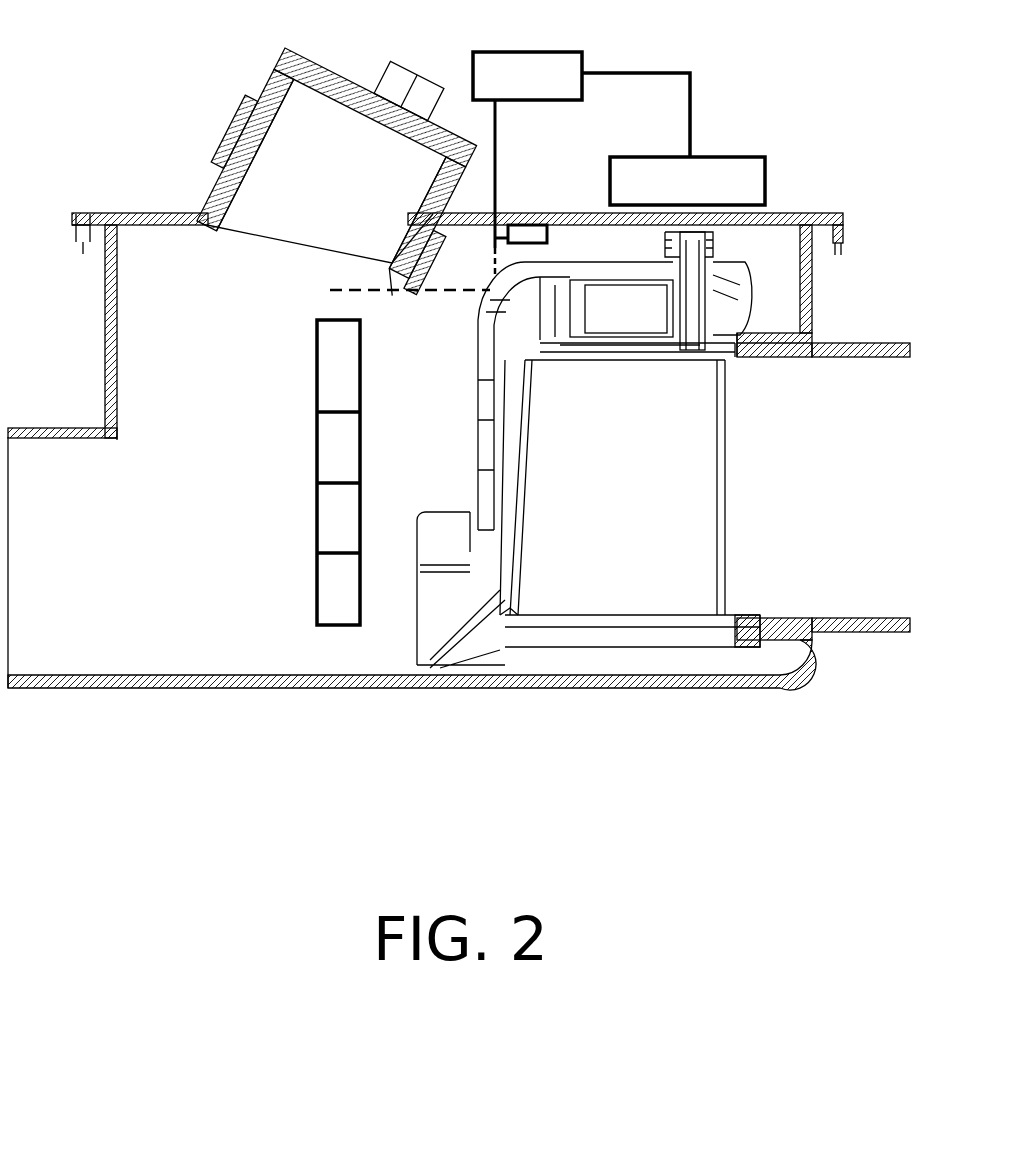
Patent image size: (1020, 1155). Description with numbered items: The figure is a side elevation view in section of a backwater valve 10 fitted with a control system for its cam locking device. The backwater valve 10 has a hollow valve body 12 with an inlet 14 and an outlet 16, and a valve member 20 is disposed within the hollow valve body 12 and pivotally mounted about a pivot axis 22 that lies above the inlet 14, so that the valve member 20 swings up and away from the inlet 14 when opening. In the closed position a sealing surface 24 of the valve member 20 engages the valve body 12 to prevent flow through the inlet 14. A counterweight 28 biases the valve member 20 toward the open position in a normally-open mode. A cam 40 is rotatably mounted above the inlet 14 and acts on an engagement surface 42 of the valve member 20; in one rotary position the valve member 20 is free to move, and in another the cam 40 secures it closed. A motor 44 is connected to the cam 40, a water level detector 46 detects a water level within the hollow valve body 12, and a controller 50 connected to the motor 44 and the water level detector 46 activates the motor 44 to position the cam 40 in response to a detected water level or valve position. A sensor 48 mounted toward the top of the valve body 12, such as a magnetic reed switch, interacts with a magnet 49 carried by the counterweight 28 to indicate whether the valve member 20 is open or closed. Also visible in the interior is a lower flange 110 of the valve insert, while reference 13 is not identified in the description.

The backwater valve 10 is at (203, 133).
The hollow valve body 12 is at (322, 690).
The chamber 13 is at (245, 675).
The inlet 14 is at (863, 590).
The outlet 16 is at (22, 595).
The valve member 20 is at (510, 525).
The pivot axis 22 is at (560, 345).
The sealing surface 24 is at (505, 618).
The counterweight 28 is at (745, 265).
The cam 40 is at (610, 300).
The engagement surface 42 is at (565, 275).
The motor 44 is at (722, 190).
The water level detector 46 is at (325, 392).
The sensor 48 is at (525, 232).
The magnet 49 is at (493, 270).
The controller 50 is at (538, 60).
The lower flange 110 is at (430, 640).